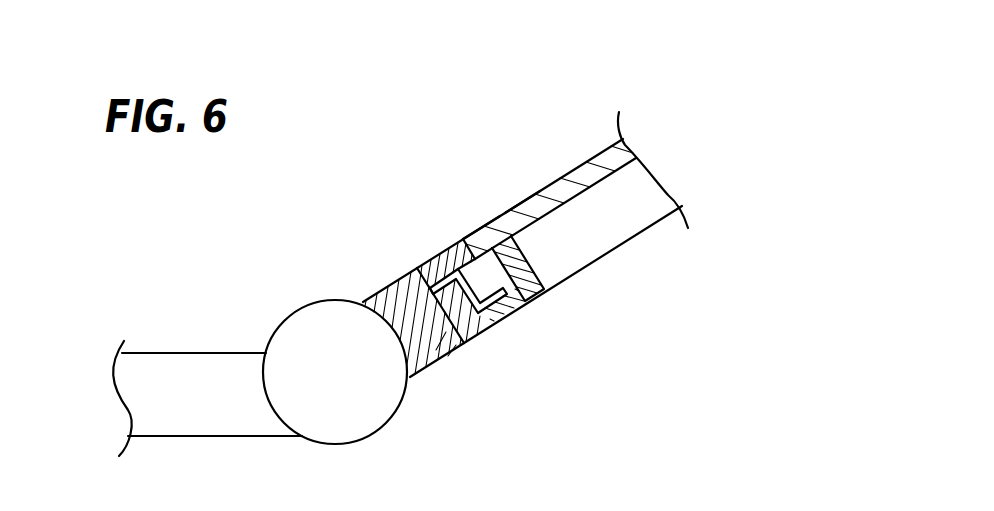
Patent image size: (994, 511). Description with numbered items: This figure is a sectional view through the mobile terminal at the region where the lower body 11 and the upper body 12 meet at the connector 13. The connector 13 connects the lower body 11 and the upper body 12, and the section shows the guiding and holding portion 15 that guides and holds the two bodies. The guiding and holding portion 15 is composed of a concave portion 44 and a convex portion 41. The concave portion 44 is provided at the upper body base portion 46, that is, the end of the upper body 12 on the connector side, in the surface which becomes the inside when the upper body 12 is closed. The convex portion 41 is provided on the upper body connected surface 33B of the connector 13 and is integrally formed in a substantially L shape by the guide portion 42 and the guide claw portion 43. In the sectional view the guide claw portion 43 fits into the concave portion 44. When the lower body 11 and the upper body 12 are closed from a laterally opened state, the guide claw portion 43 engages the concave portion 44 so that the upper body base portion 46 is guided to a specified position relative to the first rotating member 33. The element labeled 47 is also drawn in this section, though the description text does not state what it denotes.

The lower body 11 is at (183, 367).
The upper body 12 is at (615, 218).
The connector 13 is at (301, 306).
The guiding and holding portion 15 is at (488, 114).
The first rotating member 33 is at (383, 289).
The upper body connected surface 33B is at (447, 348).
The convex portion 41 is at (423, 272).
The guide portion 42 is at (540, 289).
The guide claw portion 43 is at (472, 327).
The concave portion 44 is at (470, 237).
The upper body base portion 46 is at (520, 206).
The ring member 47 is at (437, 286).